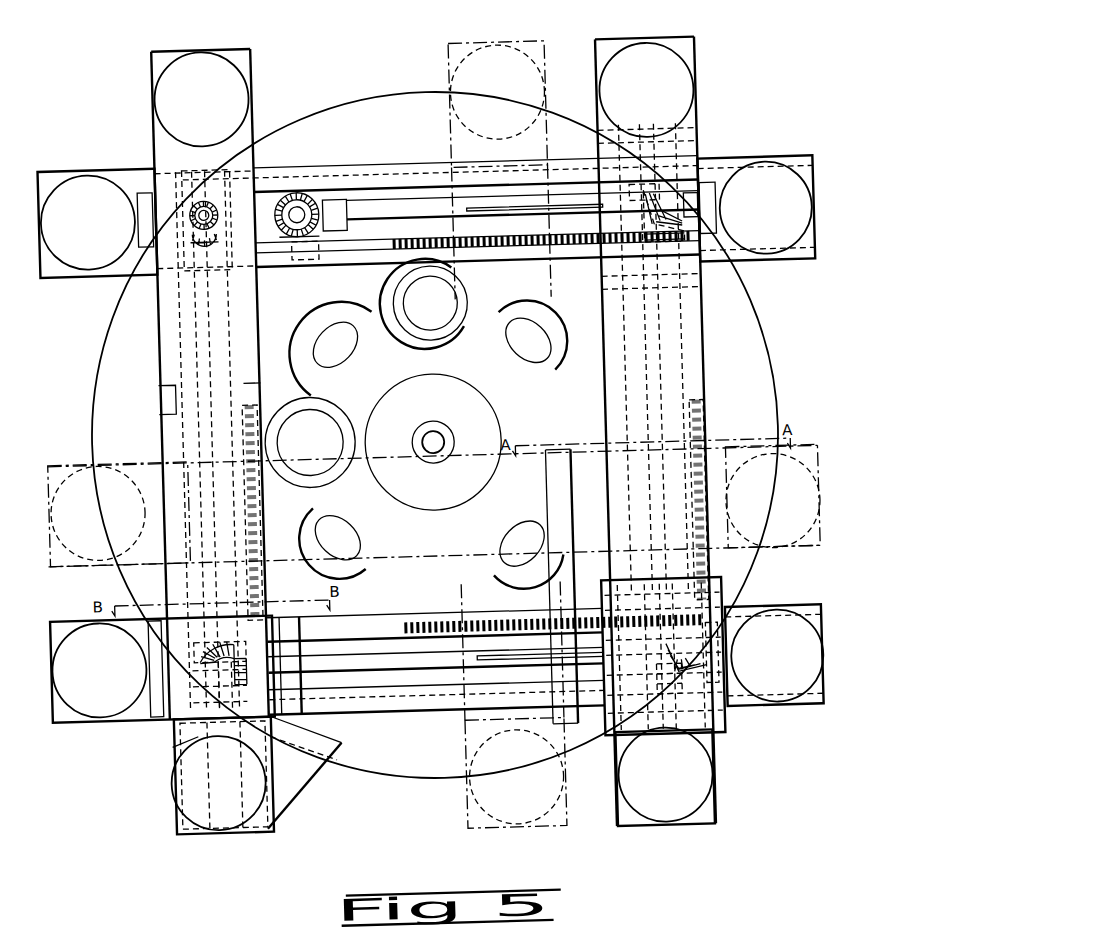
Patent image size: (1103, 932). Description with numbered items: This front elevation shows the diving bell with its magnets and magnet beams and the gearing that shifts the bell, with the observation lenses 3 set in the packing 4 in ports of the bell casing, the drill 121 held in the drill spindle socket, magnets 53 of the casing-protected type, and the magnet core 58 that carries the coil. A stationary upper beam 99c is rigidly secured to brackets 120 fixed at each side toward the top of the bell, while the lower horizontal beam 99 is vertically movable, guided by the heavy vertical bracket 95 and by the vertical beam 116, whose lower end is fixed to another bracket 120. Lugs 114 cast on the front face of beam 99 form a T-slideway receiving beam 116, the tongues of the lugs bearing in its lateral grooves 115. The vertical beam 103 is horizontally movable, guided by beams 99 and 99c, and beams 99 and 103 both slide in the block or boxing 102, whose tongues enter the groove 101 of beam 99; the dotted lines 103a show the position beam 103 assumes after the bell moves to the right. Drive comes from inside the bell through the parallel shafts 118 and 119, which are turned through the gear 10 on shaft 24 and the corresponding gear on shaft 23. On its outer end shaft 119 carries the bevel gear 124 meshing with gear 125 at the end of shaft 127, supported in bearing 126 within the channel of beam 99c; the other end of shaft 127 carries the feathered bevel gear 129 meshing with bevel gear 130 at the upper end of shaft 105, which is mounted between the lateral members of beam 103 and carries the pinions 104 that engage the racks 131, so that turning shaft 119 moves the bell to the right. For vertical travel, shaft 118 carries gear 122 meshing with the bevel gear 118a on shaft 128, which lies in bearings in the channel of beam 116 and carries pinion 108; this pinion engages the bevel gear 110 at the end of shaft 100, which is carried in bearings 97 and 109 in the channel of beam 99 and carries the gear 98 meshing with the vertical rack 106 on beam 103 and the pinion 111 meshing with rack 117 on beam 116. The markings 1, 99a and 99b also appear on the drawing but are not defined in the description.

The machine 1 is at (436, 448).
The observation lenses 3 is at (528, 335).
The packing 4 is at (463, 313).
The gear 10 is at (283, 203).
The shaft 23 is at (204, 286).
The shaft 24 is at (331, 348).
The magnet 53 is at (250, 92).
The magnet core 58 is at (322, 477).
The vertical bracket 95 is at (565, 521).
The bearing 97 is at (683, 680).
The gear 98 is at (701, 688).
The horizontal beam 99 is at (395, 616).
The carriage block 99a is at (580, 617).
The carriage center line 99b is at (409, 554).
The upper beam 99c is at (478, 274).
The shaft 100 is at (391, 756).
The groove 101 is at (383, 627).
The boxing 102 is at (707, 731).
The vertical beam 103 is at (695, 360).
The dotted-line position of beam 103 103a is at (462, 63).
The pinion 104 is at (712, 248).
The shaft 105 is at (666, 391).
The vertical rack 106 is at (706, 420).
The pinion 108 is at (197, 634).
The bearing 109 is at (301, 762).
The bevel gear 110 is at (223, 669).
The pinion 111 is at (236, 672).
The lugs 114 is at (707, 127).
The lateral grooves 115 is at (530, 175).
The vertical beam 116 is at (191, 825).
The rack 117 is at (238, 425).
The shaft 118 is at (224, 205).
The bevel gear 118a is at (224, 225).
The shaft 119 is at (296, 190).
The bracket 120 is at (289, 174).
The drill 121 is at (436, 441).
The gear 122 is at (207, 190).
The bevel gear 124 is at (307, 188).
The gear 125 is at (325, 193).
The bearing 126 is at (340, 197).
The shaft 127 is at (408, 211).
The shaft 128 is at (203, 303).
The bevel gear 129 is at (647, 198).
The bevel gear 130 is at (666, 226).
The rack 131 is at (405, 249).